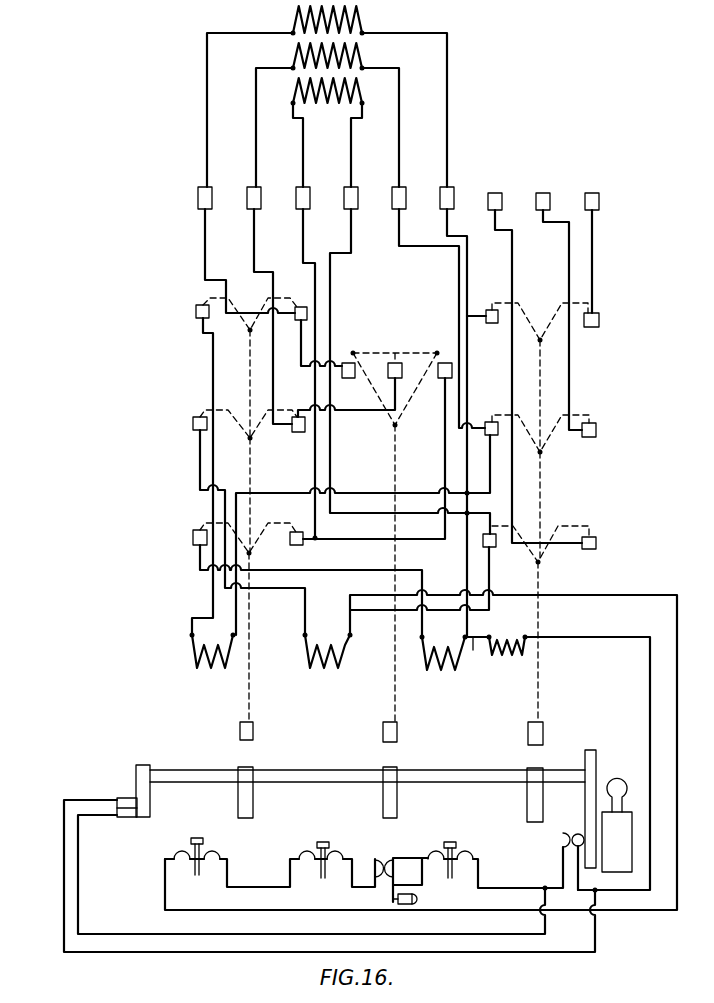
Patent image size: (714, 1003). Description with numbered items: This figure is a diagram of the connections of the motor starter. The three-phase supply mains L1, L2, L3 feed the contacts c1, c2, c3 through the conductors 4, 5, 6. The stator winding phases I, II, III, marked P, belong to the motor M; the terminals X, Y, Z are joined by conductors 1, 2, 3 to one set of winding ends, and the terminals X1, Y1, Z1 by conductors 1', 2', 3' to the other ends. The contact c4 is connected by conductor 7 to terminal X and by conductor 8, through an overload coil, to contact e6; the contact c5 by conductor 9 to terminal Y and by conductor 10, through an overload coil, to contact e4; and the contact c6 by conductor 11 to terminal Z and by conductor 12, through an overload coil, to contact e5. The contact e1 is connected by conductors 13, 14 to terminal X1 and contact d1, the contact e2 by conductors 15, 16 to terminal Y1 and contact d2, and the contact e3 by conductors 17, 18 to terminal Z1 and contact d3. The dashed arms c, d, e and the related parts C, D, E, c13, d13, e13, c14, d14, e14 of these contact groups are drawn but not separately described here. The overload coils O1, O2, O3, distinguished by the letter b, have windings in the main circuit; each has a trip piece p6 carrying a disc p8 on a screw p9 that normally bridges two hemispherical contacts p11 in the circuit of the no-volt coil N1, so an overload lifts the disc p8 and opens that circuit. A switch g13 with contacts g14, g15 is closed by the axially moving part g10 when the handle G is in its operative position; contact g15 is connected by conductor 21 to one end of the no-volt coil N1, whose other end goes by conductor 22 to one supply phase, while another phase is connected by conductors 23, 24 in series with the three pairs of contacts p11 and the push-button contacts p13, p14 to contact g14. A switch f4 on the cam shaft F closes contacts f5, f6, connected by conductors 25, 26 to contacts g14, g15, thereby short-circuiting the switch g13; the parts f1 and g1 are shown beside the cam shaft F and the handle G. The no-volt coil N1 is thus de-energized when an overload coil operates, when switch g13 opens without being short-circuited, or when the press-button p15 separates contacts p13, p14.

The stator winding phase P is at (347, 53).
The first stator winding phase I is at (366, 21).
The second stator winding phase II is at (380, 57).
The third stator winding phase III is at (384, 95).
The motor M is at (250, 94).
The conductor 1 is at (416, 110).
The conductor 1' is at (192, 99).
The conductor 2 is at (390, 127).
The conductor 2' is at (261, 127).
The conductor 3 is at (363, 145).
The conductor 3' is at (310, 145).
The terminal X is at (439, 187).
The terminal X1 is at (194, 187).
The terminal Y is at (391, 187).
The terminal Y1 is at (246, 187).
The terminal Z is at (343, 187).
The terminal Z1 is at (294, 187).
The supply main L1 is at (495, 189).
The supply main L2 is at (543, 189).
The supply main L3 is at (592, 189).
The conductor 4 is at (513, 365).
The conductor 5 is at (568, 243).
The conductor 6 is at (594, 272).
The conductor 7 is at (468, 248).
The conductor 8 is at (470, 355).
The conductor 9 is at (456, 279).
The conductor 10 is at (214, 478).
The conductor 11 is at (331, 280).
The conductor 12 is at (200, 476).
The conductor 13 is at (208, 235).
The conductor 14 is at (301, 370).
The conductor 15 is at (258, 235).
The conductor 16 is at (355, 414).
The conductor 17 is at (308, 235).
The conductor 18 is at (442, 455).
The relay contact arm c is at (520, 302).
The contact c1 is at (597, 545).
The contact c2 is at (597, 429).
The contact c3 is at (600, 321).
The contact c4 is at (491, 309).
The contact c5 is at (492, 421).
The contact c6 is at (495, 548).
The relay C is at (545, 372).
The relay coil c13 is at (527, 735).
The slider c14 is at (527, 802).
The relay contact arm d is at (395, 352).
The contact d1 is at (345, 380).
The contact d2 is at (397, 371).
The contact d3 is at (446, 362).
The relay D is at (393, 445).
The relay coil d13 is at (398, 735).
The slider d14 is at (383, 772).
The relay contact arm e is at (203, 298).
The contact e1 is at (299, 321).
The contact e2 is at (297, 433).
The contact e3 is at (294, 546).
The contact e4 is at (195, 312).
The contact e5 is at (193, 425).
The contact e6 is at (193, 540).
The relay E is at (248, 355).
The relay coil e13 is at (254, 735).
The slider e14 is at (254, 800).
The overload coil O1 is at (213, 665).
The overload coil O2 is at (328, 665).
The overload coil O3 is at (444, 666).
The overload coil series designation b is at (330, 703).
The no-volt coil N1 is at (507, 659).
The conductor 21 is at (593, 640).
The conductor 22 is at (477, 653).
The conductor 23 is at (652, 590).
The conductor 24 is at (252, 886).
The conductor 25 is at (78, 860).
The conductor 26 is at (64, 940).
The cam shaft F is at (188, 766).
The slider contact f1 is at (593, 750).
The switch f4 is at (143, 805).
The contact f5 is at (123, 815).
The contact f6 is at (117, 802).
The handle G is at (618, 775).
The lamp holder g1 is at (590, 826).
The axially moving part g10 is at (617, 842).
The switch g13 is at (560, 866).
The contact g14 is at (562, 840).
The contact g15 is at (578, 834).
The trip piece p6 is at (196, 870).
The circular disc p8 is at (180, 852).
The screw p9 is at (198, 838).
The hemispherical contacts p11 is at (216, 853).
The push-button switch contact p13 is at (378, 859).
The push-button switch contact p14 is at (392, 860).
The press-button p15 is at (415, 905).